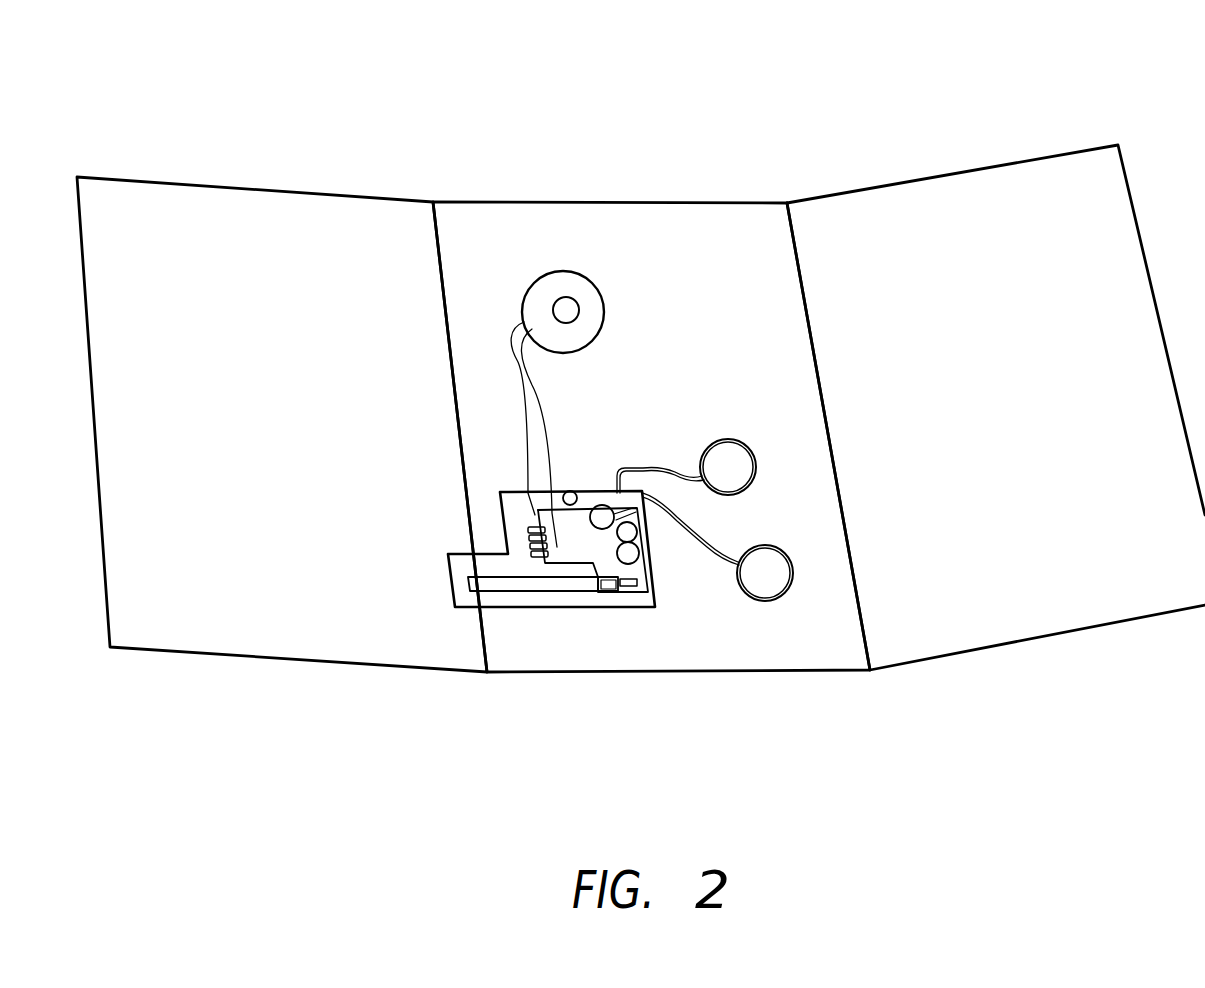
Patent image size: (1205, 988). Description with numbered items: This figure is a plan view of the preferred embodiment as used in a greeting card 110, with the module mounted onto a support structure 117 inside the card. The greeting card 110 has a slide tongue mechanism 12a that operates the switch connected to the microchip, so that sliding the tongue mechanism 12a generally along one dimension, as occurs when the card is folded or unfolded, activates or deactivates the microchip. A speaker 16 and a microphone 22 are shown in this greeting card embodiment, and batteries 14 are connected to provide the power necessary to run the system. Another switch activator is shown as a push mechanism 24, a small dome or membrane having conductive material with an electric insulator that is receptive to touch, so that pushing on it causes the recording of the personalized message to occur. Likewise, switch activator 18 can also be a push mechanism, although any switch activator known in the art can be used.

The greeting card 110 is at (912, 141).
The support structure 117 is at (753, 233).
The speaker 16 is at (566, 305).
The microphone 22 is at (570, 493).
The slide tongue mechanism 12a is at (528, 582).
The batteries 14 is at (628, 556).
The push mechanism 24 is at (728, 470).
The switch activator 18 is at (765, 577).